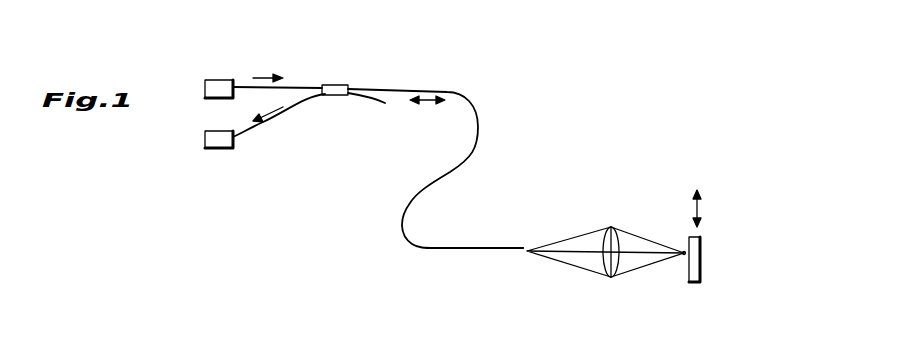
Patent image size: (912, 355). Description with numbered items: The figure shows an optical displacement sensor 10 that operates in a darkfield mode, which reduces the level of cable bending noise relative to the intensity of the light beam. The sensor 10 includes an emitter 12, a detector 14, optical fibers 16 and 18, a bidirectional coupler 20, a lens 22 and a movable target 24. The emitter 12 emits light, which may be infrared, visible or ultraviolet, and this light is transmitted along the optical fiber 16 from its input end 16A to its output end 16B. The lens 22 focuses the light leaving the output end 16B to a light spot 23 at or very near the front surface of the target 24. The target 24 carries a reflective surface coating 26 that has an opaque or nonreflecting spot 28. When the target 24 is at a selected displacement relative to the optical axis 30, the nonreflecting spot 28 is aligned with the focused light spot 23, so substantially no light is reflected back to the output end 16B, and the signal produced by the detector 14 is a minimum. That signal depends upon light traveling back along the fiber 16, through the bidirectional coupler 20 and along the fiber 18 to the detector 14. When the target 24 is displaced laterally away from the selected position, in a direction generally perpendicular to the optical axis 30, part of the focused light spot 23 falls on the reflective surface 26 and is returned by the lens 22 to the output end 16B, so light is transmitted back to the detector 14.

The optical displacement sensor 10 is at (635, 97).
The emitter 12 is at (222, 80).
The detector 14 is at (218, 148).
The optical fiber 16 is at (298, 87).
The input end 16A is at (233, 87).
The output end 16B is at (523, 247).
The optical fiber 18 is at (279, 125).
The bidirectional coupler 20 is at (336, 95).
The lens 22 is at (611, 227).
The light spot 23 is at (682, 247).
The movable target 24 is at (701, 266).
The reflective surface coating 26 is at (685, 236).
The nonreflecting spot 28 is at (682, 263).
The optical axis 30 is at (570, 255).